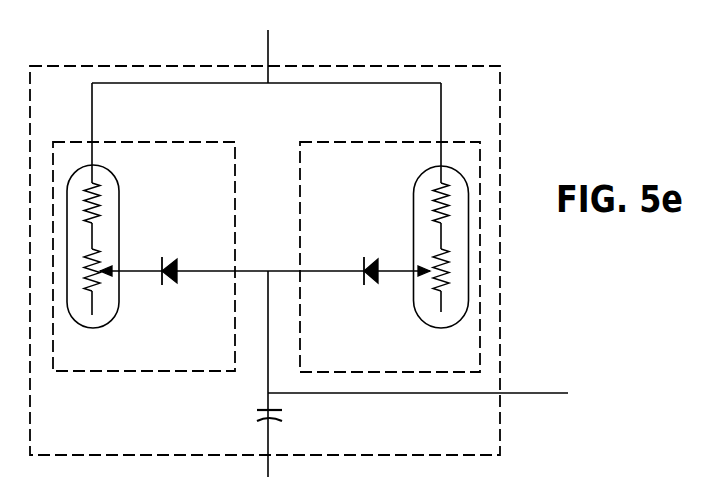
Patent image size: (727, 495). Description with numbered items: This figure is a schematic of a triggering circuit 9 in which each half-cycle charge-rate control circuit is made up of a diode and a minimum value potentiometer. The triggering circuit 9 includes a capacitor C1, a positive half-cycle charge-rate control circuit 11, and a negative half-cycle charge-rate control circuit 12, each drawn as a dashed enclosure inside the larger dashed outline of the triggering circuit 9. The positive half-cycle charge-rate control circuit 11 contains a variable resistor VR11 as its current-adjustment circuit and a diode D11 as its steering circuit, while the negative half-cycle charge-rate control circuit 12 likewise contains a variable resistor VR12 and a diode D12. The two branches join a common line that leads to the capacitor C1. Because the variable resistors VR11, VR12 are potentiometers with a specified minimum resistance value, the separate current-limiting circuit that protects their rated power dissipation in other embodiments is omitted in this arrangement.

The triggering circuit 9 is at (186, 65).
The negative half-cycle charge-rate control circuit 12 is at (145, 141).
The positive half-cycle charge-rate control circuit 11 is at (392, 141).
The variable resistor VR12 is at (145, 191).
The variable resistor VR11 is at (413, 210).
The diode D12 is at (177, 282).
The diode D11 is at (376, 284).
The capacitor C1 is at (258, 416).